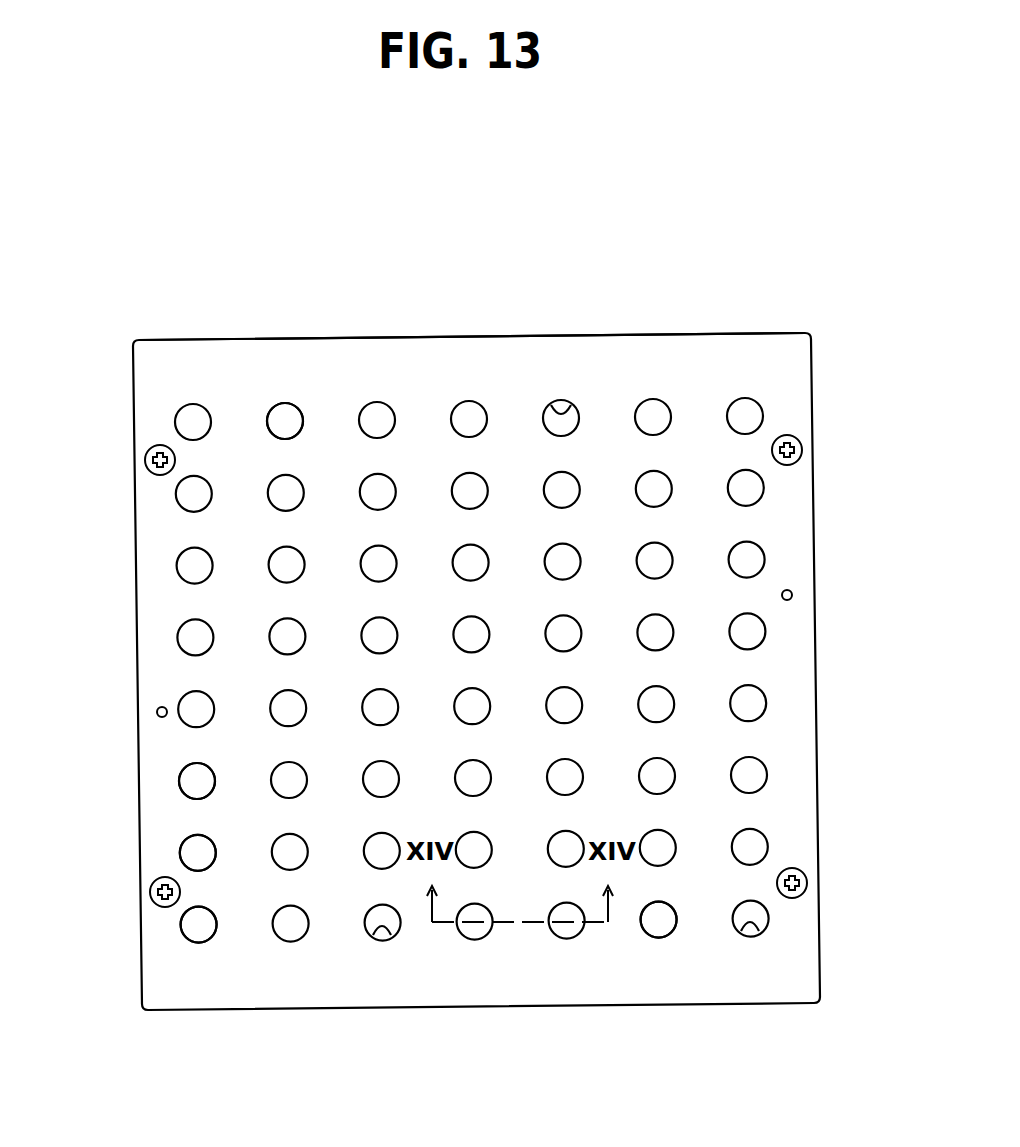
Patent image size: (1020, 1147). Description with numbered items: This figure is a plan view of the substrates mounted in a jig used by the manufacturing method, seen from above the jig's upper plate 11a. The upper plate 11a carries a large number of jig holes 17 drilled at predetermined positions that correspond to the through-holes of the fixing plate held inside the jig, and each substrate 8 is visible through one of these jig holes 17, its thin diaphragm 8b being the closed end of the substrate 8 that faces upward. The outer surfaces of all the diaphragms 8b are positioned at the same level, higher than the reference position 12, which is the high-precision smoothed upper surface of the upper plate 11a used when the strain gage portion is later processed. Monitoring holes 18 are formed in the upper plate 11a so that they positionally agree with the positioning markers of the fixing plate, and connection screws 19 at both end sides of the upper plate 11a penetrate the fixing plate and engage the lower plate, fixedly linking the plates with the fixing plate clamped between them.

The substrate 8 is at (196, 404).
The diaphragm 8b is at (287, 426).
The upper plate 11a is at (172, 338).
The reference position 12 is at (143, 378).
The jig hole 17 is at (571, 405).
The monitoring hole 18 is at (157, 712).
The connection screw 19 is at (152, 462).